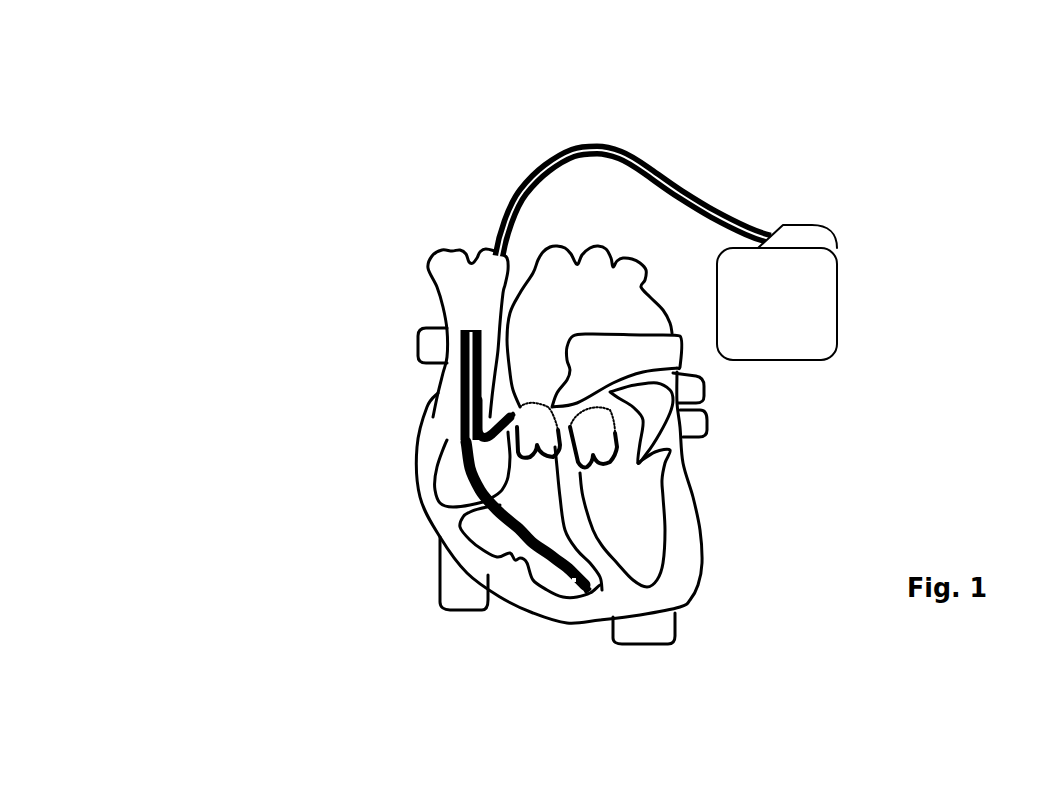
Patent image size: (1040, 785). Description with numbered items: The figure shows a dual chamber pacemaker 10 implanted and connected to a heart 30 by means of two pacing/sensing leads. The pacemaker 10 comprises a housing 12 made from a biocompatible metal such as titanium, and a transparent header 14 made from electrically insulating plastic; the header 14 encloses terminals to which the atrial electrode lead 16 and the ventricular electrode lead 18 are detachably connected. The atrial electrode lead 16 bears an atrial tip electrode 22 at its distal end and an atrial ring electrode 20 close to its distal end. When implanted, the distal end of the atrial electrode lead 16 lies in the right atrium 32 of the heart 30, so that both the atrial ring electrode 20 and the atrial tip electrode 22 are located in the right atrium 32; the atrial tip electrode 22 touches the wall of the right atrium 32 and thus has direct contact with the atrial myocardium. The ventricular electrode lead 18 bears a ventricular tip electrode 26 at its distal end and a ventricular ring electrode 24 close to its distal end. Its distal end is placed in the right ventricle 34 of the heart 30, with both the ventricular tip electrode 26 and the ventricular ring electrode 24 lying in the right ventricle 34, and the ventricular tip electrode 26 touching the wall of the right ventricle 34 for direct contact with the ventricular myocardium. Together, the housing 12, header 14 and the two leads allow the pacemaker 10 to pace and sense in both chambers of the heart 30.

The dual chamber pacemaker 10 is at (856, 296).
The housing 12 is at (787, 333).
The header 14 is at (808, 240).
The atrial electrode lead 16 is at (674, 210).
The ventricular electrode lead 18 is at (650, 164).
The atrial ring electrode 20 is at (507, 423).
The atrial tip electrode 22 is at (513, 412).
The ventricular ring electrode 24 is at (573, 583).
The ventricular tip electrode 26 is at (588, 590).
The heart 30 is at (449, 492).
The right atrium 32 is at (452, 474).
The right ventricle 34 is at (512, 552).